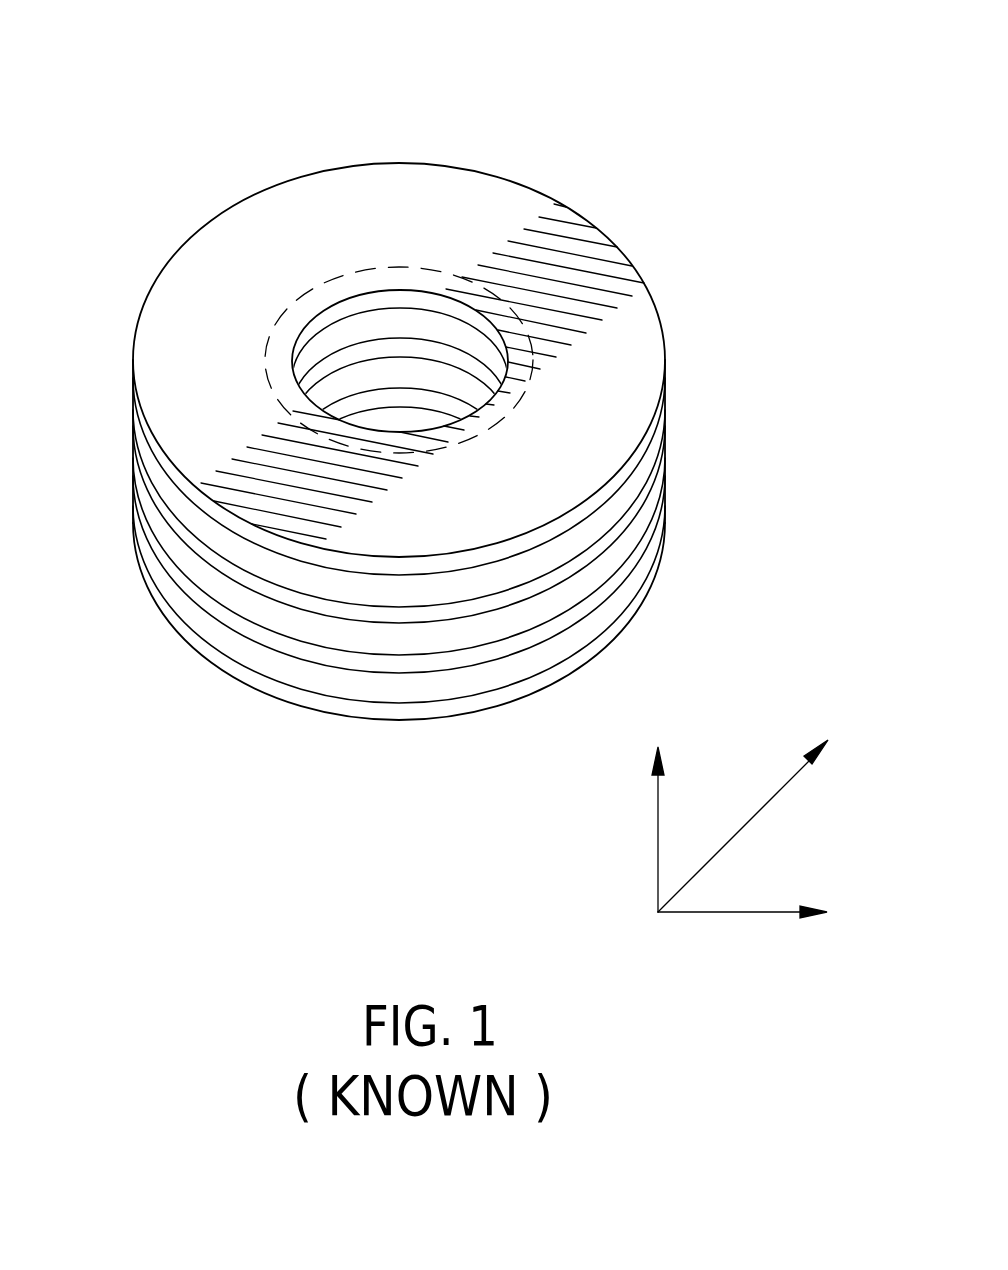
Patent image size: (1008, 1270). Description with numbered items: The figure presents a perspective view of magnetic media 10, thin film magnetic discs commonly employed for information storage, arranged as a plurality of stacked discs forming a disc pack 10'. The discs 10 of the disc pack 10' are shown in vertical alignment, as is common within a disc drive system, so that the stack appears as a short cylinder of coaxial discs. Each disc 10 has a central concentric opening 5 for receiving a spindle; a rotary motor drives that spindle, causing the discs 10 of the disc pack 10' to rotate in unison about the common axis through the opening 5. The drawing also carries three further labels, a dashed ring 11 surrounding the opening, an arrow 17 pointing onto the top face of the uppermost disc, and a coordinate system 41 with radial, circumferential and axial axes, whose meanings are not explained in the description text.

The disc pack 10' is at (389, 372).
The magnetic disc 10 is at (433, 447).
The central concentric opening 5 is at (408, 333).
The dashed circle 11 is at (272, 338).
The top surface hatched region 17 is at (178, 428).
The coordinate system 41 is at (658, 841).